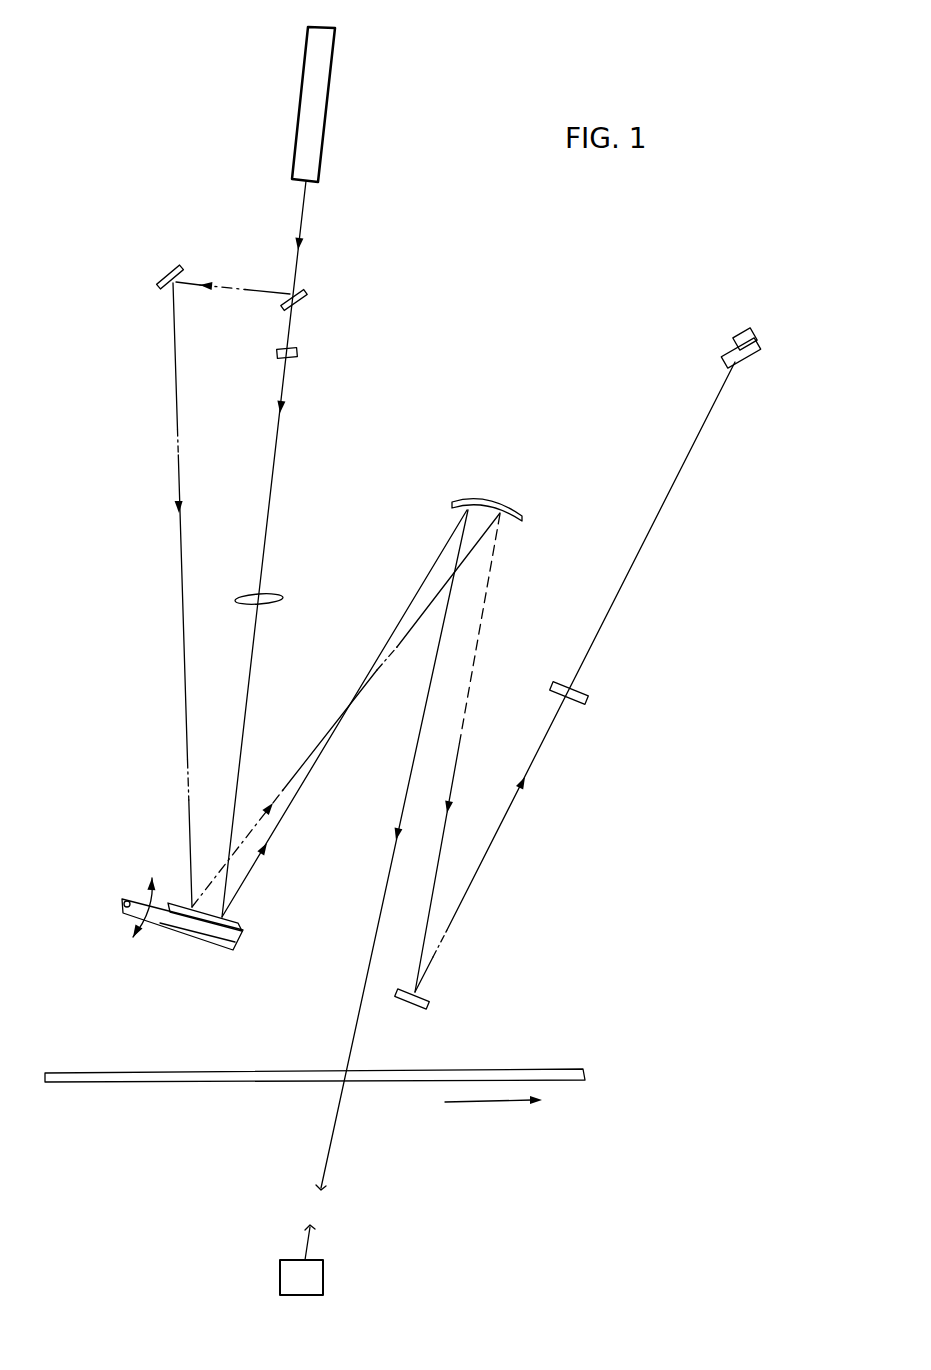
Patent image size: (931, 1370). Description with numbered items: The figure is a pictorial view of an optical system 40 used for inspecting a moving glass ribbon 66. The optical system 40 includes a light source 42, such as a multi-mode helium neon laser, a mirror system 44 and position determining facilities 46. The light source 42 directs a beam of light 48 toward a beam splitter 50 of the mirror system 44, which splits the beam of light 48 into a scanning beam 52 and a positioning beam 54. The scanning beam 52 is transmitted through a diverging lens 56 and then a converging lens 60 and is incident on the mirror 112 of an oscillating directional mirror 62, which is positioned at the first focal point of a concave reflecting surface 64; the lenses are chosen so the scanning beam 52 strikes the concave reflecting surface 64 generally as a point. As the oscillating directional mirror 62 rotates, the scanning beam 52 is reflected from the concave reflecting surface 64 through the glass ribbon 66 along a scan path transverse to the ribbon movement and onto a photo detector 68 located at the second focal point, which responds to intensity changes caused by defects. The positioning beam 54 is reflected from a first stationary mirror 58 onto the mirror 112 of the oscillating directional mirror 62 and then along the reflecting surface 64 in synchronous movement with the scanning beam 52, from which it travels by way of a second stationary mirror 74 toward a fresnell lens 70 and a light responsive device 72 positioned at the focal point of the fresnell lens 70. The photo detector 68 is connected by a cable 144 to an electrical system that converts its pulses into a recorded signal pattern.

The optical system 40 is at (488, 251).
The light source 42 is at (352, 94).
The mirror system 44 is at (392, 466).
The position determining facilities 46 is at (722, 496).
The beam of light 48 is at (303, 218).
The beam splitter 50 is at (283, 306).
The scanning beam 52 is at (292, 325).
The positioning beam 54 is at (262, 292).
The diverging lens 56 is at (277, 354).
The first stationary mirror 58 is at (158, 282).
The converging lens 60 is at (285, 600).
The oscillating directional mirror 62 is at (260, 947).
The concave reflecting surface 64 is at (515, 520).
The glass ribbon 66 is at (553, 1072).
The photo detector 68 is at (344, 1266).
The fresnell lens 70 is at (602, 699).
The light responsive device 72 is at (756, 346).
The second stationary mirror 74 is at (445, 1004).
The mirror 112 is at (233, 921).
The cable 144 is at (323, 1285).